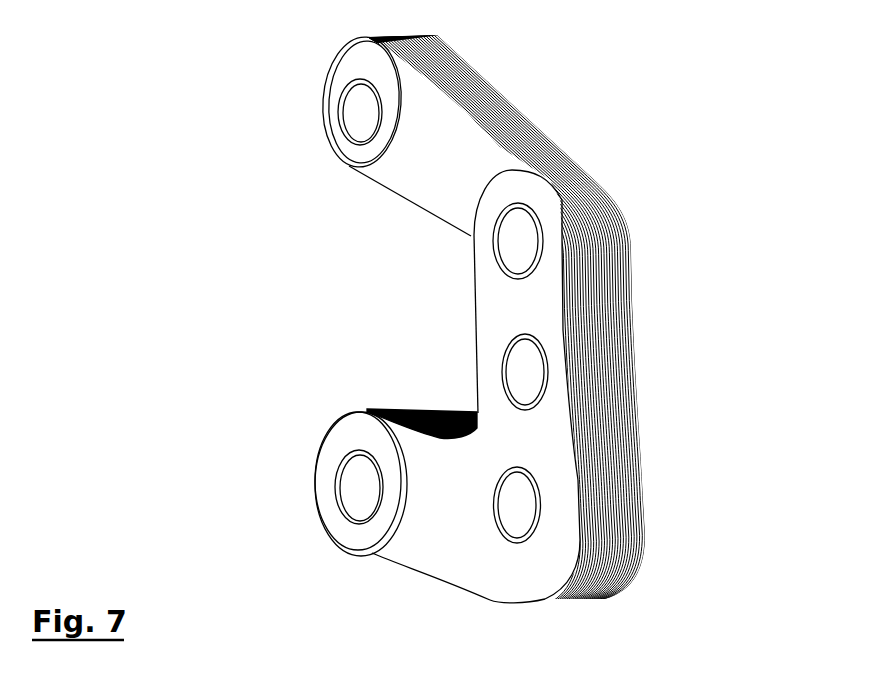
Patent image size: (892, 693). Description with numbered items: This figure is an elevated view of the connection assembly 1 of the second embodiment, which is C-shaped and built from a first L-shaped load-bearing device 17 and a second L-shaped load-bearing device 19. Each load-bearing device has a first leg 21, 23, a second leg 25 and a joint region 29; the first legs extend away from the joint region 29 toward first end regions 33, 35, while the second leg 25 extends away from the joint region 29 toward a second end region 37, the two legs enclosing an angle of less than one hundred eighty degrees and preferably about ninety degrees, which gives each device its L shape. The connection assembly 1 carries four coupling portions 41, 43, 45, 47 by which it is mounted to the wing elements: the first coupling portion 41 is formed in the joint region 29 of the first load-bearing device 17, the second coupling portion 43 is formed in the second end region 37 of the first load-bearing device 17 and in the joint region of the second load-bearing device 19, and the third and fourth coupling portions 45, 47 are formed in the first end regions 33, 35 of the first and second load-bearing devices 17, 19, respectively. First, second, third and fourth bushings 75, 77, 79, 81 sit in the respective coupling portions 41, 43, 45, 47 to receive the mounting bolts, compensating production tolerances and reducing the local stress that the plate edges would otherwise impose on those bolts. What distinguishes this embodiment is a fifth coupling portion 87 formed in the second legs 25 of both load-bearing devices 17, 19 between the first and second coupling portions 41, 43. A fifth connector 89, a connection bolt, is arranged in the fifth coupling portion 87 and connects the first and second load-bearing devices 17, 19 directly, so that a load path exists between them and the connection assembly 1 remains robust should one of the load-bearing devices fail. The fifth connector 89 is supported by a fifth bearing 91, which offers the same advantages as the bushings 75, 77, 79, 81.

The connection assembly 1 is at (650, 195).
The first L-shaped load-bearing device 17 is at (467, 604).
The second L-shaped load-bearing device 19 is at (530, 70).
The first leg 21 is at (440, 518).
The first leg 23 is at (455, 152).
The second leg 25 is at (550, 312).
The joint region 29 is at (553, 560).
The first end region 33 is at (371, 410).
The first end region 35 is at (353, 167).
The second end region 37 is at (472, 236).
The first coupling portion 41 is at (525, 512).
The second coupling portion 43 is at (520, 240).
The third coupling portion 45 is at (355, 490).
The fourth coupling portion 47 is at (357, 107).
The first bushing 75 is at (518, 540).
The second bushing 77 is at (540, 215).
The third bushing 79 is at (330, 458).
The fourth bushing 81 is at (378, 86).
The fifth coupling portion 87 is at (527, 368).
The fifth connector 89 is at (527, 390).
The fifth bearing 91 is at (510, 352).